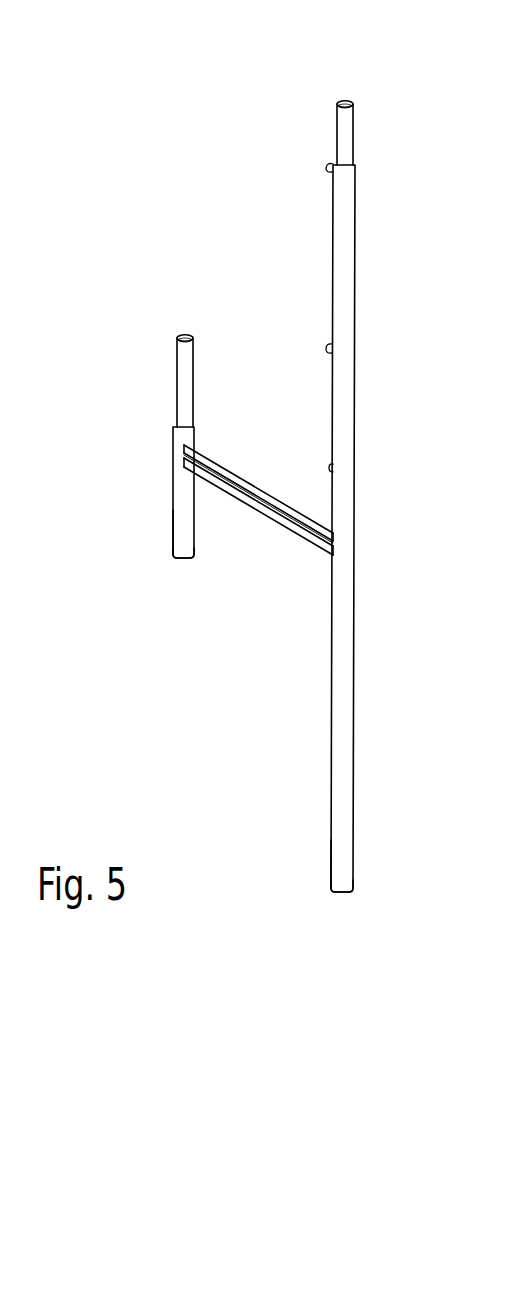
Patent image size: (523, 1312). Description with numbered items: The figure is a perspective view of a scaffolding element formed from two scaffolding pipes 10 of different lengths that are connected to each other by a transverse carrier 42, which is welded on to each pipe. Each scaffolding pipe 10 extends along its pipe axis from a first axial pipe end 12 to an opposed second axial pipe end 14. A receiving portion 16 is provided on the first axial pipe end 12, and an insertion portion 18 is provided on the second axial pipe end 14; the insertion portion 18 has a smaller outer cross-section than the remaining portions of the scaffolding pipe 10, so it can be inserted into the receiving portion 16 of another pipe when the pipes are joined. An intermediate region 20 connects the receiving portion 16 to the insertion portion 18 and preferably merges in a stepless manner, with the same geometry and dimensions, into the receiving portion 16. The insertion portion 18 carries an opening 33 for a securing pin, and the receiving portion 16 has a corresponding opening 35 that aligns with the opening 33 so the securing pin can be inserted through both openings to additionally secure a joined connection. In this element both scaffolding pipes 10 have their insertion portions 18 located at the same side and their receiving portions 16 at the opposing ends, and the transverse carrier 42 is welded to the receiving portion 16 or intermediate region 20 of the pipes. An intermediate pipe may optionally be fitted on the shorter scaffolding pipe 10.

The scaffolding pipe 10 is at (402, 330).
The first axial pipe end 12 is at (344, 912).
The second axial pipe end 14 is at (339, 92).
The receiving portion 16 is at (330, 878).
The insertion portion 18 is at (353, 137).
The intermediate region 20 is at (355, 458).
The opening 33 is at (342, 130).
The opening 35 is at (331, 855).
The transverse carrier 42 is at (270, 487).